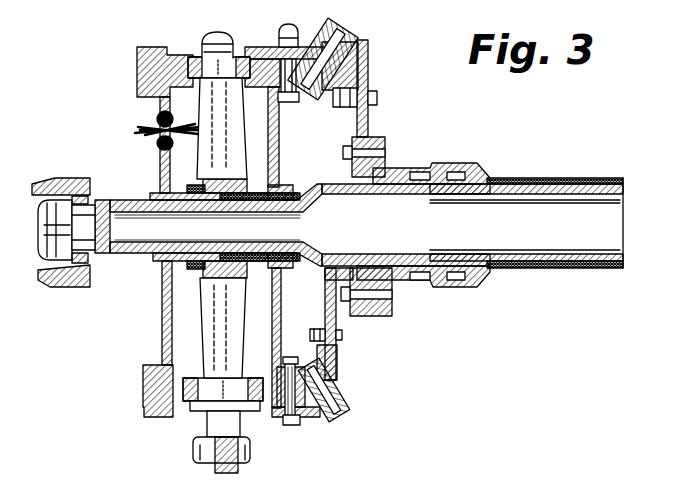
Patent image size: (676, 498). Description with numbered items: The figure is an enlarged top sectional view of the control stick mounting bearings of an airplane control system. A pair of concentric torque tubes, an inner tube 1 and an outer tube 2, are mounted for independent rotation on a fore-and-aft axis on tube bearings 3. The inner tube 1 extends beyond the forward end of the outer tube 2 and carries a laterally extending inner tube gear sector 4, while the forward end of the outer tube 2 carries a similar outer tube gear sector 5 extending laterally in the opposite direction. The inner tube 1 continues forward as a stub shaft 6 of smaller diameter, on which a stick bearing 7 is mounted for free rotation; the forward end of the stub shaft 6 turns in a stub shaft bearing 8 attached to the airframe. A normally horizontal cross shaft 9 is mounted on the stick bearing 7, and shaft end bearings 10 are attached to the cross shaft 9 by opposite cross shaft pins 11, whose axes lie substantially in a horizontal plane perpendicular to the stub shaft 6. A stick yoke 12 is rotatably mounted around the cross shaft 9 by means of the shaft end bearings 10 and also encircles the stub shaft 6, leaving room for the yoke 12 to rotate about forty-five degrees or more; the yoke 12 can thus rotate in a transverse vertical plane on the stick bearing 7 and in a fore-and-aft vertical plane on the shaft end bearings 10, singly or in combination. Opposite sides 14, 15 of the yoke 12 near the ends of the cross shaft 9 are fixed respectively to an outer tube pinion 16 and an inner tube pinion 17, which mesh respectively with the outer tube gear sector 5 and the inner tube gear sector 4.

The inner tube 1 is at (550, 178).
The outer tube 2 is at (525, 268).
The tube bearings 3 is at (353, 204).
The inner tube gear sector 4 is at (350, 400).
The outer tube gear sector 5 is at (362, 42).
The stub shaft 6 is at (130, 201).
The stick bearing 7 is at (222, 213).
The stub shaft bearing 8 is at (88, 262).
The cross shaft 9 is at (208, 328).
The shaft end bearings 10 is at (237, 54).
The cross shaft pins 11 is at (213, 33).
The stick yoke 12 is at (163, 168).
The side of the yoke 14 is at (137, 48).
The side of the yoke 15 is at (143, 390).
The outer tube pinion 16 is at (333, 26).
The inner tube pinion 17 is at (325, 419).